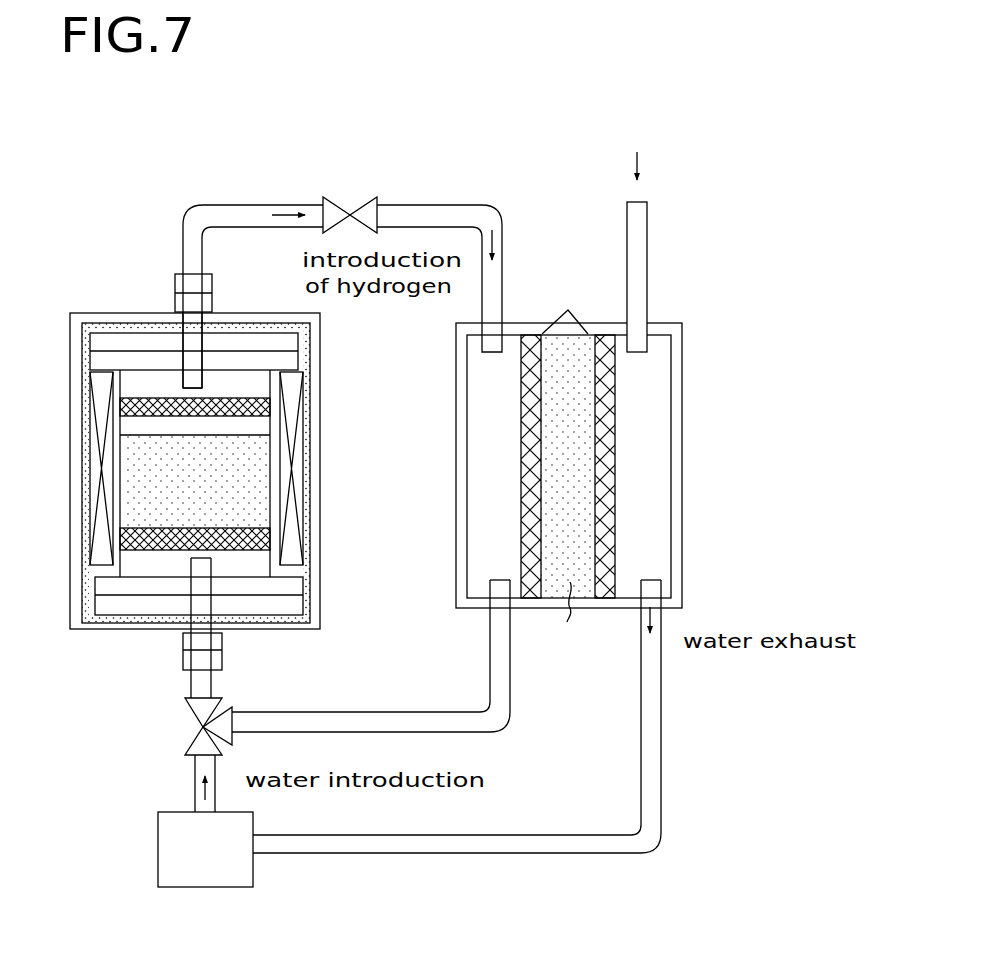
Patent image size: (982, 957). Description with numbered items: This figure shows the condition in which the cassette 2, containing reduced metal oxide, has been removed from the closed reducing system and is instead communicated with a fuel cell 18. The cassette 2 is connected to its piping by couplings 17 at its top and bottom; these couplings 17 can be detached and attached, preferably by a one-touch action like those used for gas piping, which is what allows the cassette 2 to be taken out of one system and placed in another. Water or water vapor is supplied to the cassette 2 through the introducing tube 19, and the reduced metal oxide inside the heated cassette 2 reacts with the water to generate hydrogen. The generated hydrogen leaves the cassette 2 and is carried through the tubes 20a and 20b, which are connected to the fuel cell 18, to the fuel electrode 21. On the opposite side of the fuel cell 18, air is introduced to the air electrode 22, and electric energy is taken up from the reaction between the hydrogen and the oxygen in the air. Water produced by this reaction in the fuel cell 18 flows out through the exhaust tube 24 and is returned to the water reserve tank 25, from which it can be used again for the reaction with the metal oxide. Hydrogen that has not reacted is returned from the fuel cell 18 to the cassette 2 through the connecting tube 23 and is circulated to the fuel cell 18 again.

The cassette 2 is at (70, 628).
The coupling 17 is at (172, 298).
The fuel cell 18 is at (579, 387).
The introducing tube 19 is at (203, 682).
The tube 20a is at (253, 218).
The tube 20b is at (428, 208).
The fuel electrode 21 is at (487, 435).
The air electrode 22 is at (657, 445).
The connecting tube 23 is at (418, 712).
The exhaust tube 24 is at (453, 856).
The water reserve tank 25 is at (227, 903).